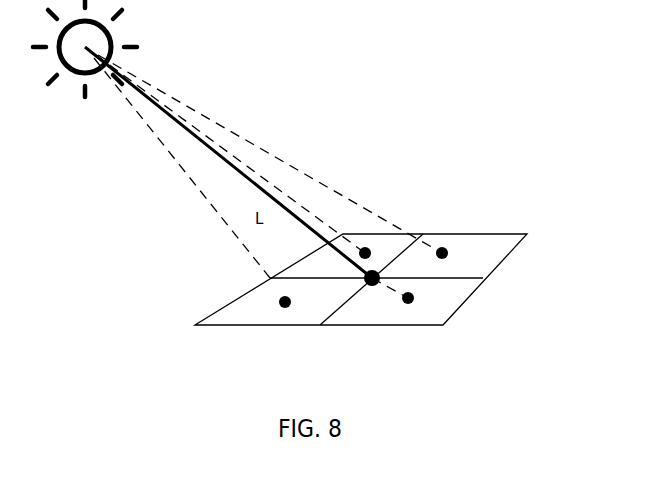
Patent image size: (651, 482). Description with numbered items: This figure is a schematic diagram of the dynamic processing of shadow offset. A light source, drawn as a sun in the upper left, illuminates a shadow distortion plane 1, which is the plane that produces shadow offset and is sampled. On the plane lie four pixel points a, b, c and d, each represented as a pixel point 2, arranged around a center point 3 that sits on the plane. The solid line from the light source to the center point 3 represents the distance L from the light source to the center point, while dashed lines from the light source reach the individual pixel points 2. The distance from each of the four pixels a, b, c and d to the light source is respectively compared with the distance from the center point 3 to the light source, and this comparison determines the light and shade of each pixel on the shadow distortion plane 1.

The shadow distortion plane 1 is at (226, 305).
The pixel point 2 is at (446, 252).
The center point 3 is at (364, 278).